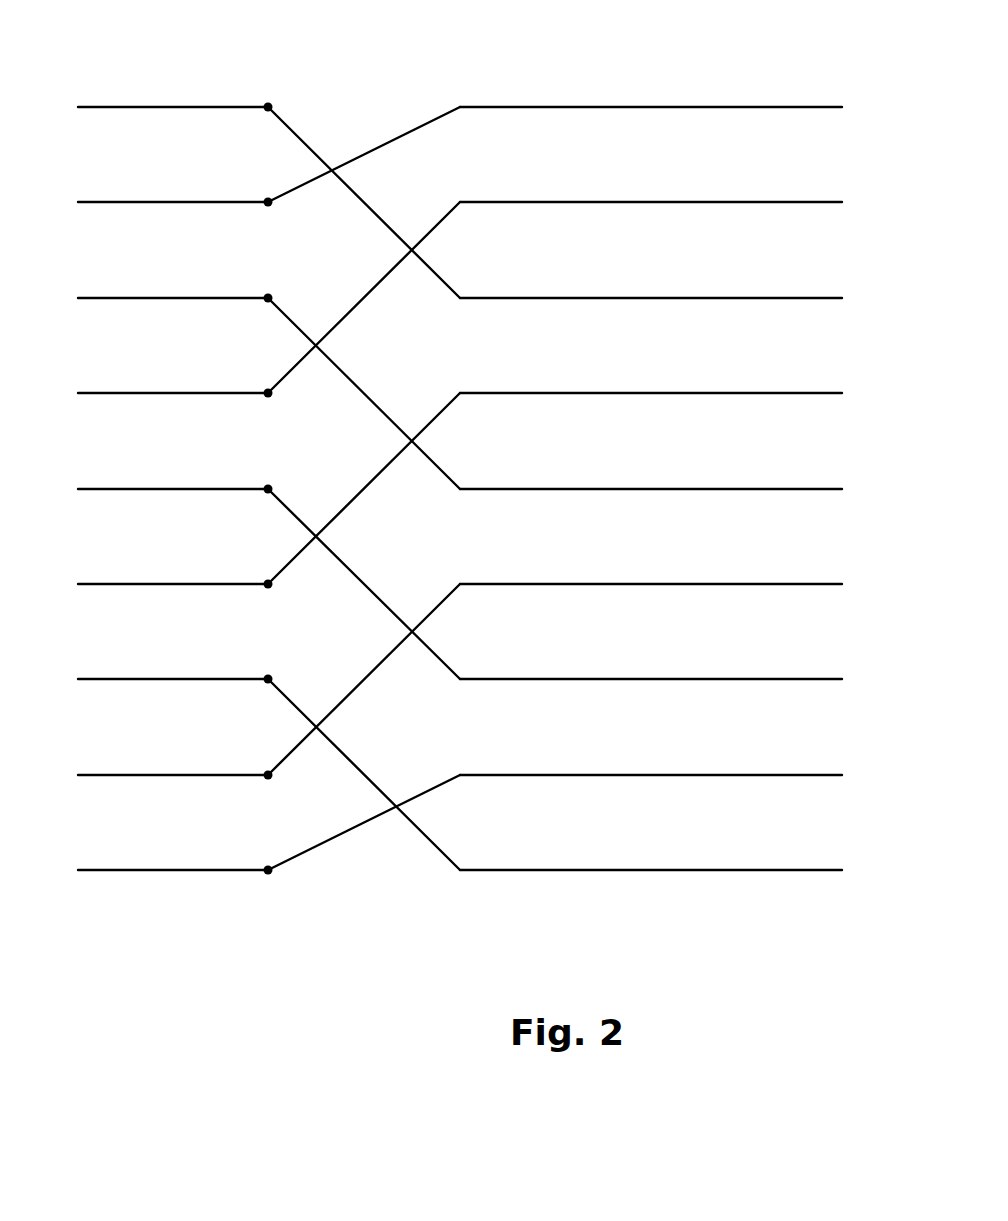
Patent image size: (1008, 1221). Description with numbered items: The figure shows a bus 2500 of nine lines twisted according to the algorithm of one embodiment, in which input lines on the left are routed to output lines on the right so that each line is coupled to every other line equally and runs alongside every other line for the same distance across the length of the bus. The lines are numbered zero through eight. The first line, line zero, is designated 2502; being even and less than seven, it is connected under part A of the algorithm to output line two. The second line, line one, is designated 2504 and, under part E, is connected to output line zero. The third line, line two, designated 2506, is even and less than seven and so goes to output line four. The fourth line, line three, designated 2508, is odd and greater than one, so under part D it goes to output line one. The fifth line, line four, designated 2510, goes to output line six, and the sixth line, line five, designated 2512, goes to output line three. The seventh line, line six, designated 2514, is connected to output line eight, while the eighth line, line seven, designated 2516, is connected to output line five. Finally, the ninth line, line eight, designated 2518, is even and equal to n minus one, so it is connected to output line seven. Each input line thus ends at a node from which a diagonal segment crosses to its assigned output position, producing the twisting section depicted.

The bus 2500 is at (416, 938).
The line 0 2502 is at (98, 107).
The line 1 2504 is at (122, 202).
The line 2 2506 is at (120, 298).
The line 3 2508 is at (100, 393).
The line 4 2510 is at (100, 489).
The line 5 2512 is at (120, 584).
The line 6 2514 is at (120, 679).
The line 7 2516 is at (120, 775).
The line 8 2518 is at (236, 871).